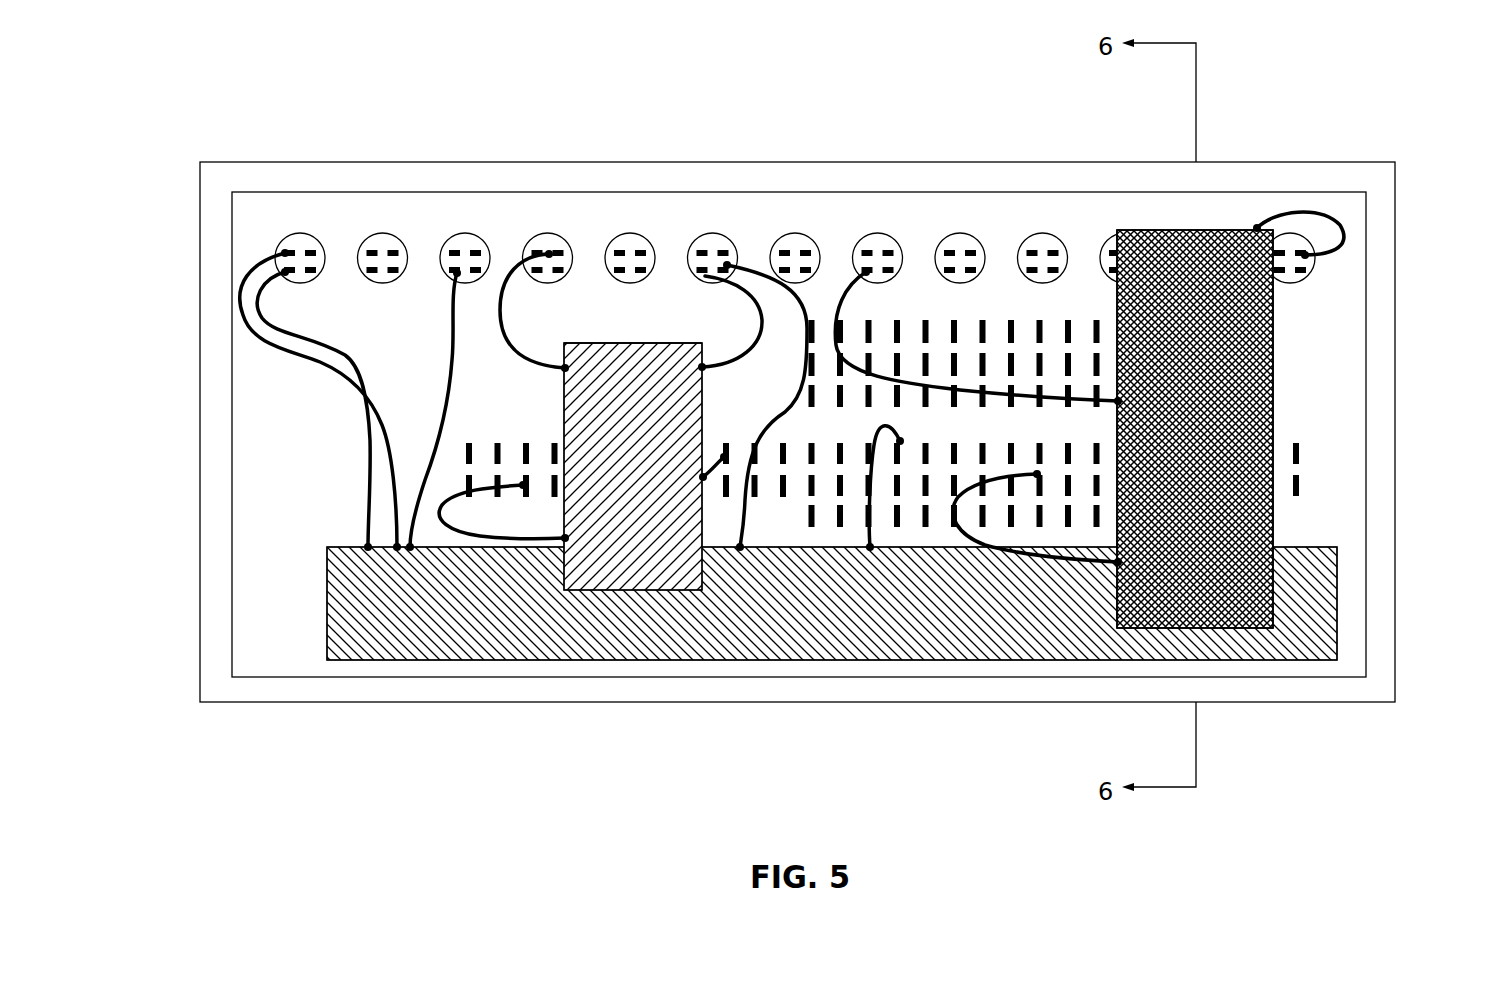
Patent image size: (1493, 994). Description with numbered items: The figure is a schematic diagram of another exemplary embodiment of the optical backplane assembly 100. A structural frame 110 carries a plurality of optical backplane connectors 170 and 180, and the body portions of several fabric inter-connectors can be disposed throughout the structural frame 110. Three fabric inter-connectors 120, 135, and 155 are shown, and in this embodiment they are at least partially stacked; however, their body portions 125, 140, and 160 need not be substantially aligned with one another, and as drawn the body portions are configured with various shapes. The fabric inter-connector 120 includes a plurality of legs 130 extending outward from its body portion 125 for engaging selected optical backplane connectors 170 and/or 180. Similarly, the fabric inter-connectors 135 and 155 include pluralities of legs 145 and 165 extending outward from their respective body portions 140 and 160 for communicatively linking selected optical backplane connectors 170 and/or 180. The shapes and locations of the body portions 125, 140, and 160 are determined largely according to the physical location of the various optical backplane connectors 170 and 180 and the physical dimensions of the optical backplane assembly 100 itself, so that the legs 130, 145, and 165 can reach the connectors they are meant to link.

The optical backplane assembly 100 is at (262, 80).
The structural frame 110 is at (497, 162).
The fabric inter-connector 120 is at (324, 594).
The body portion 125 is at (458, 647).
The legs 130 is at (428, 463).
The fabric inter-connector 135 is at (658, 335).
The body portion 140 is at (587, 397).
The legs 145 is at (488, 472).
The fabric inter-connector 155 is at (1282, 518).
The body portion 160 is at (1236, 413).
The legs 165 is at (1297, 212).
The optical backplane connectors 170 is at (1050, 236).
The optical backplane connectors 180 is at (928, 507).